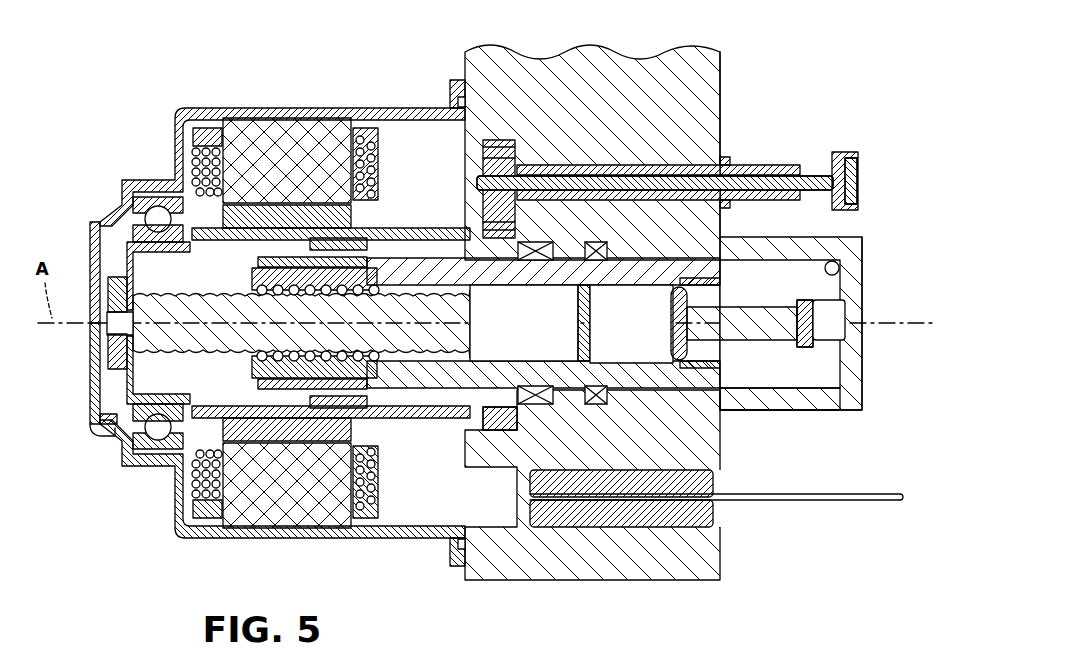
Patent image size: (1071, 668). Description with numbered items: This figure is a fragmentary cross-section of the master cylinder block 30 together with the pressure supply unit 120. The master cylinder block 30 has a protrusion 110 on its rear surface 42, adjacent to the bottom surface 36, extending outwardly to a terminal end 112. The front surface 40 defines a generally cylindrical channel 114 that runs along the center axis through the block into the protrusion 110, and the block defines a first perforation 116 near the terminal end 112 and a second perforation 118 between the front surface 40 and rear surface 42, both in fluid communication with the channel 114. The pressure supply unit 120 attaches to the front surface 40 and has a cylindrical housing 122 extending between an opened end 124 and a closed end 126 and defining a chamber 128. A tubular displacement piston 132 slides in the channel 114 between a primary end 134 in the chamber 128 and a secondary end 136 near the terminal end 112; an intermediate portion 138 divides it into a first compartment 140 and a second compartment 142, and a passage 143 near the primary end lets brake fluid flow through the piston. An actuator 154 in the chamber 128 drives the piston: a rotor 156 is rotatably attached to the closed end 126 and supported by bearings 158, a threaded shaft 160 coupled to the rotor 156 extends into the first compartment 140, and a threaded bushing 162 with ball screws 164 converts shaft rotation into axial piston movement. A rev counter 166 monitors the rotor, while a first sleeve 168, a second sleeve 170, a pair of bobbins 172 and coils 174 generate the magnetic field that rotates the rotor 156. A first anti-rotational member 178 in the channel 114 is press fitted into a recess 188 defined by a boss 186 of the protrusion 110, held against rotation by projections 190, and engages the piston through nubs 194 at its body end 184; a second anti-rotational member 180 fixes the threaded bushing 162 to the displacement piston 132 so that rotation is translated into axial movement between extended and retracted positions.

The master cylinder block 30 is at (595, 132).
The bottom surface 36 is at (655, 540).
The front surface 40 is at (465, 55).
The rear surface 42 is at (722, 88).
The protrusion 110 is at (818, 160).
The terminal end 112 is at (865, 395).
The channel 114 is at (795, 380).
The first perforation 116 is at (850, 270).
The second perforation 118 is at (566, 165).
The pressure supply unit 120 is at (196, 108).
The housing 122 is at (90, 425).
The opened end 124 is at (448, 92).
The closed end 126 is at (88, 225).
The chamber 128 is at (113, 425).
The displacement piston 132 is at (628, 165).
The primary end 134 is at (210, 128).
The secondary end 136 is at (740, 500).
The intermediate portion 138 is at (574, 340).
The first compartment 140 is at (487, 293).
The second compartment 142 is at (625, 455).
The passage 143 is at (673, 160).
The actuator 154 is at (250, 527).
The rotor 156 is at (123, 270).
The bearings 158 is at (137, 437).
The threaded shaft 160 is at (147, 335).
The threaded bushing 162 is at (360, 510).
The ball screws 164 is at (395, 229).
The rev counter 166 is at (498, 140).
The first sleeve 168 is at (295, 135).
The second sleeve 170 is at (300, 427).
The bobbins 172 is at (348, 128).
The coils 174 is at (207, 517).
The first anti-rotational member 178 is at (840, 355).
The second anti-rotational member 180 is at (252, 207).
The body end 184 is at (672, 318).
The boss 186 is at (835, 295).
The recess 188 is at (845, 318).
The projections 190 is at (805, 300).
The nubs 194 is at (735, 158).